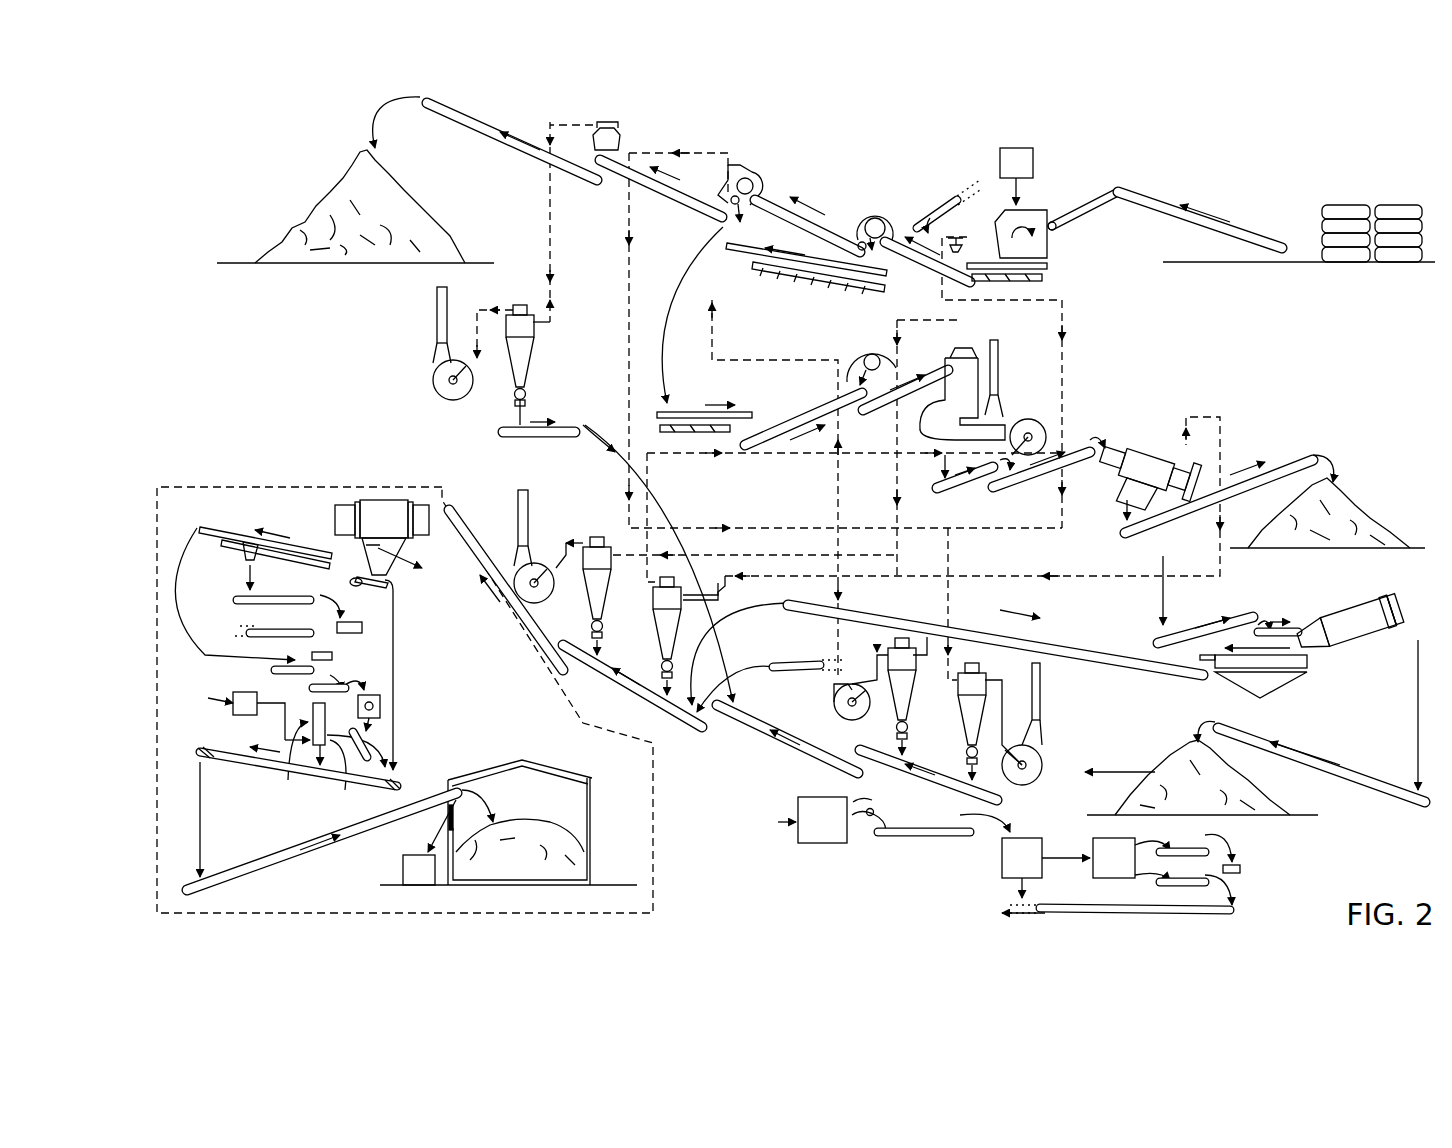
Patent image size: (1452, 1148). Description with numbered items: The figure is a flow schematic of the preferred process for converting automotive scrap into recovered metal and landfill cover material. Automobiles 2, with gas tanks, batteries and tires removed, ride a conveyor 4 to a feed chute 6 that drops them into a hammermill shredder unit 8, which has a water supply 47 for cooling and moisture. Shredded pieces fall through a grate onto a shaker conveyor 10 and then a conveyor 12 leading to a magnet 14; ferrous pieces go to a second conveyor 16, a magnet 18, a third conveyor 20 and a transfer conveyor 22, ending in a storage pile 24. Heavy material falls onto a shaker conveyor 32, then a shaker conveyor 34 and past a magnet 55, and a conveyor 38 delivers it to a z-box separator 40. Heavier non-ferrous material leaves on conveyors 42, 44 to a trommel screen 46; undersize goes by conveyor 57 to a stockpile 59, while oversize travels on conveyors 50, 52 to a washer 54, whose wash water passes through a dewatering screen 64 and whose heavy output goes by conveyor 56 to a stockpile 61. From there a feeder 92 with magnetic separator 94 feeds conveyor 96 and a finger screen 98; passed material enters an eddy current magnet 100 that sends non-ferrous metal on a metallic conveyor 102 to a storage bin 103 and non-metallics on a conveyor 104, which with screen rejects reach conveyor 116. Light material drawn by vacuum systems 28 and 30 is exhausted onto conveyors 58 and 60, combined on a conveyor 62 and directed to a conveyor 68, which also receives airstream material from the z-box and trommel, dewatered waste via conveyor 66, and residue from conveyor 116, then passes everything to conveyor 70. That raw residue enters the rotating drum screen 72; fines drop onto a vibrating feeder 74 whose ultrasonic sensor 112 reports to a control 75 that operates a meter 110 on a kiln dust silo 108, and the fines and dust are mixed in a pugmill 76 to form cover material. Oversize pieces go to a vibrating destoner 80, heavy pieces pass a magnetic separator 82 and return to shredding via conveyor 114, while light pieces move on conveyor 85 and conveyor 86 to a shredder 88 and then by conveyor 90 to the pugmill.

The automobiles 2 is at (1350, 264).
The conveyor 4 is at (1165, 210).
The feed chute 6 is at (1080, 230).
The shredder unit 8 is at (1032, 212).
The shaker conveyor 10 is at (1047, 278).
The conveyor 12 is at (942, 292).
The magnet 14 is at (884, 222).
The second conveyor 16 is at (842, 225).
The magnet 18 is at (758, 186).
The third conveyor 20 is at (705, 200).
The transfer conveyor 22 is at (500, 138).
The storage pile 24 is at (360, 263).
The vacuum system 28 is at (690, 153).
The vacuum system 30 is at (600, 140).
The shaker conveyor 32 is at (845, 288).
The shaker conveyor 34 is at (683, 412).
The conveyor 38 is at (935, 370).
The z-box separator 40 is at (970, 348).
The conveyor 42 is at (965, 490).
The conveyor 44 is at (1036, 480).
The trommel screen 46 is at (1150, 450).
The water supply 47 is at (1000, 152).
The conveyor 50 is at (1180, 625).
The conveyor 52 is at (1278, 625).
The washer 54 is at (1345, 612).
The magnet 55 is at (867, 350).
The conveyor 56 is at (1368, 775).
The conveyor 57 is at (1278, 463).
The conveyor 58 is at (948, 768).
The stockpile 59 is at (1358, 515).
The conveyor 60 is at (540, 425).
The stockpile 61 is at (1262, 792).
The conveyor 62 is at (812, 740).
The dewatering screen 64 is at (1282, 685).
The conveyor 66 is at (1075, 645).
The conveyor 68 is at (608, 668).
The conveyor 70 is at (538, 630).
The screen 72 is at (392, 500).
The vibrating feeder 74 is at (390, 585).
The control 75 is at (240, 715).
The pugmill 76 is at (230, 762).
The vibrating destoner 80 is at (222, 527).
The magnetic separator 82 is at (238, 595).
The conveyor 85 is at (272, 671).
The conveyor 86 is at (312, 689).
The shredder 88 is at (374, 694).
The conveyor 90 is at (380, 748).
The feeder 92 is at (772, 820).
The magnetic separator 94 is at (880, 800).
The conveyor 96 is at (912, 838).
The finger screen 98 is at (1002, 868).
The eddy current magnet 100 is at (1093, 840).
The metallic conveyor 102 is at (1210, 838).
The storage bin 103 is at (1242, 869).
The conveyor 104 is at (1158, 884).
The silo 108 is at (300, 765).
The meter 110 is at (345, 785).
The ultrasonic sensor 112 is at (335, 542).
The conveyor 114 is at (950, 205).
The conveyor 116 is at (770, 675).